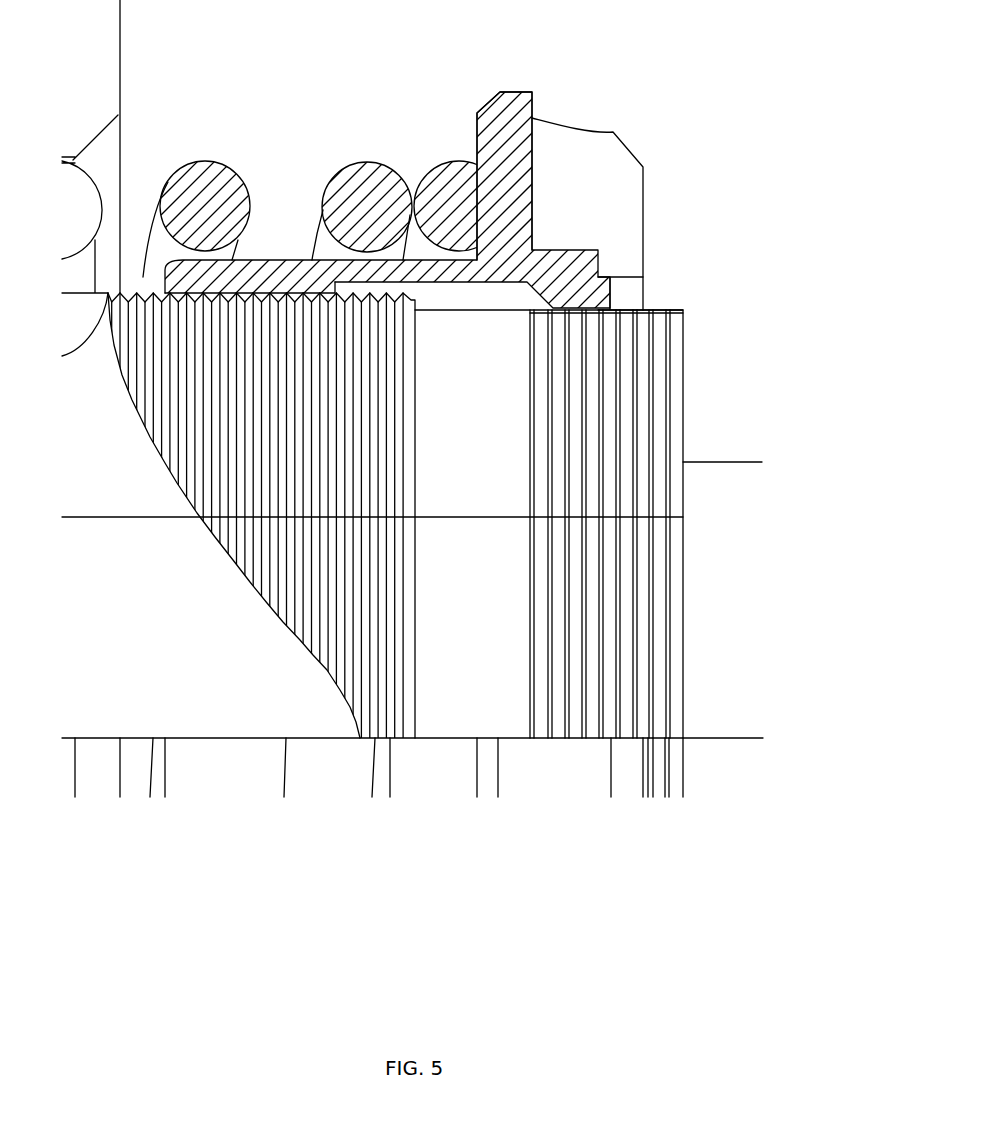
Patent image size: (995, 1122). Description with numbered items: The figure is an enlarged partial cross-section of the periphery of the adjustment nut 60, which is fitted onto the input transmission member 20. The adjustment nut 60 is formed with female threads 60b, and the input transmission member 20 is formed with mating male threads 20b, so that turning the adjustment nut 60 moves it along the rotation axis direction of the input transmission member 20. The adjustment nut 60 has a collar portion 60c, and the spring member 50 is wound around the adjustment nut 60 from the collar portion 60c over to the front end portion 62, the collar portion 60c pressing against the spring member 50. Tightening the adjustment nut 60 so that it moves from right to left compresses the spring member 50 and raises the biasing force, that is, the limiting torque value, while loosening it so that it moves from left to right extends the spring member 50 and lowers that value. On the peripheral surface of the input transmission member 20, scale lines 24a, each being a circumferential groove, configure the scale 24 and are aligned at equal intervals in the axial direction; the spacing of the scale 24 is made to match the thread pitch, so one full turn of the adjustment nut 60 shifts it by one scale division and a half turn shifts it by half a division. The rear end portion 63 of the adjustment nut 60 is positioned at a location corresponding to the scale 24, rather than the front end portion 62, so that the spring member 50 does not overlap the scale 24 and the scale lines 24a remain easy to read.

The input transmission member 20 is at (497, 397).
The male threads 20b is at (277, 296).
The scale 24 is at (668, 302).
The scale lines 24a is at (667, 352).
The spring member 50 is at (362, 174).
The adjustment nut 60 is at (600, 145).
The female threads 60b is at (277, 296).
The collar portion 60c is at (487, 140).
The front end portion 62 is at (150, 279).
The rear end portion 63 is at (648, 287).